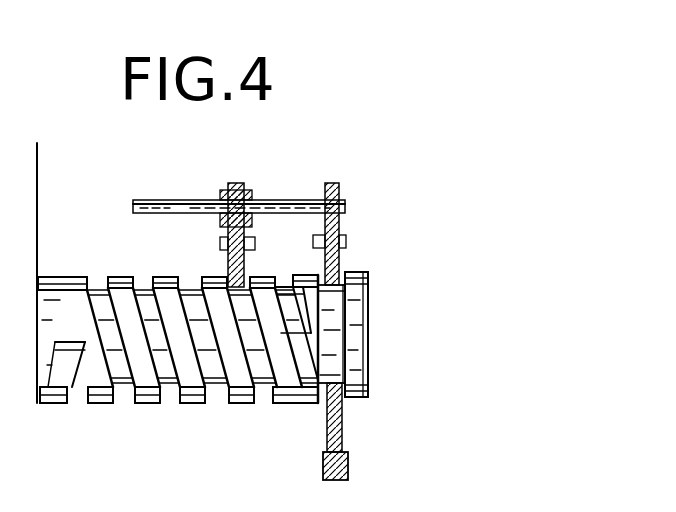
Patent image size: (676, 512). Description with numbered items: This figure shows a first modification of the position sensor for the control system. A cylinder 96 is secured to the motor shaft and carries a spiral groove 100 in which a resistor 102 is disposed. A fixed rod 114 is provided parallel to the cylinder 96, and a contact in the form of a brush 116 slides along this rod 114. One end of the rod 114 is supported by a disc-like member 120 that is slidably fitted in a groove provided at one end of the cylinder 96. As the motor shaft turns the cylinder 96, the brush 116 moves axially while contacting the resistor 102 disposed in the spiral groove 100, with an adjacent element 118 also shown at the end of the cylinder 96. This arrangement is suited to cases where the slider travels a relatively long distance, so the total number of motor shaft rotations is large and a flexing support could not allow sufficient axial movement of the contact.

The cylinder 96 is at (368, 330).
The spiral groove 100 is at (258, 389).
The resistor 102 is at (243, 327).
The fixed rod 114 is at (178, 205).
The brush 116 is at (228, 257).
The collar 118 is at (344, 270).
The disc-like member 120 is at (339, 222).